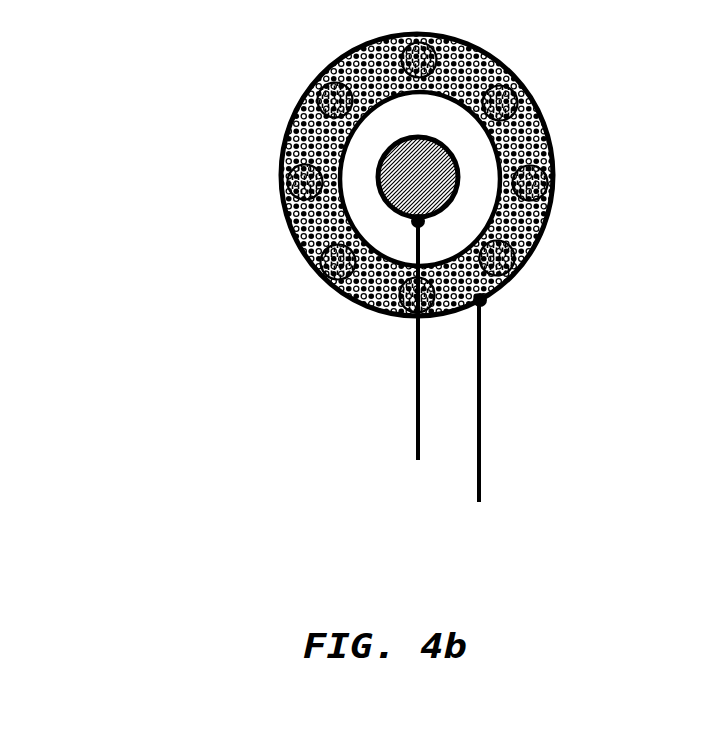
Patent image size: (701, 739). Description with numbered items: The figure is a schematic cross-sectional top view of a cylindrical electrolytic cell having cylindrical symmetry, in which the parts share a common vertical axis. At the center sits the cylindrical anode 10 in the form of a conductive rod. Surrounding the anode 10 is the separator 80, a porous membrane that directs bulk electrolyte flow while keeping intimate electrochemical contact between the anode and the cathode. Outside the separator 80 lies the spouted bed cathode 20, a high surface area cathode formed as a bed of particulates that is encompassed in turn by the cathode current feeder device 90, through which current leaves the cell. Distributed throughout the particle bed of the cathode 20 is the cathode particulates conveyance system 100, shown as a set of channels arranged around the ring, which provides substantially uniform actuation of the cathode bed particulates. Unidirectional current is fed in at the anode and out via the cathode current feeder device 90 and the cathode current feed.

The cathode current feeder device 90 is at (345, 47).
The separator 80 is at (290, 223).
The cathode 20 is at (480, 68).
The cathode particulates conveyance system 100 is at (496, 259).
The anode 10 is at (392, 230).